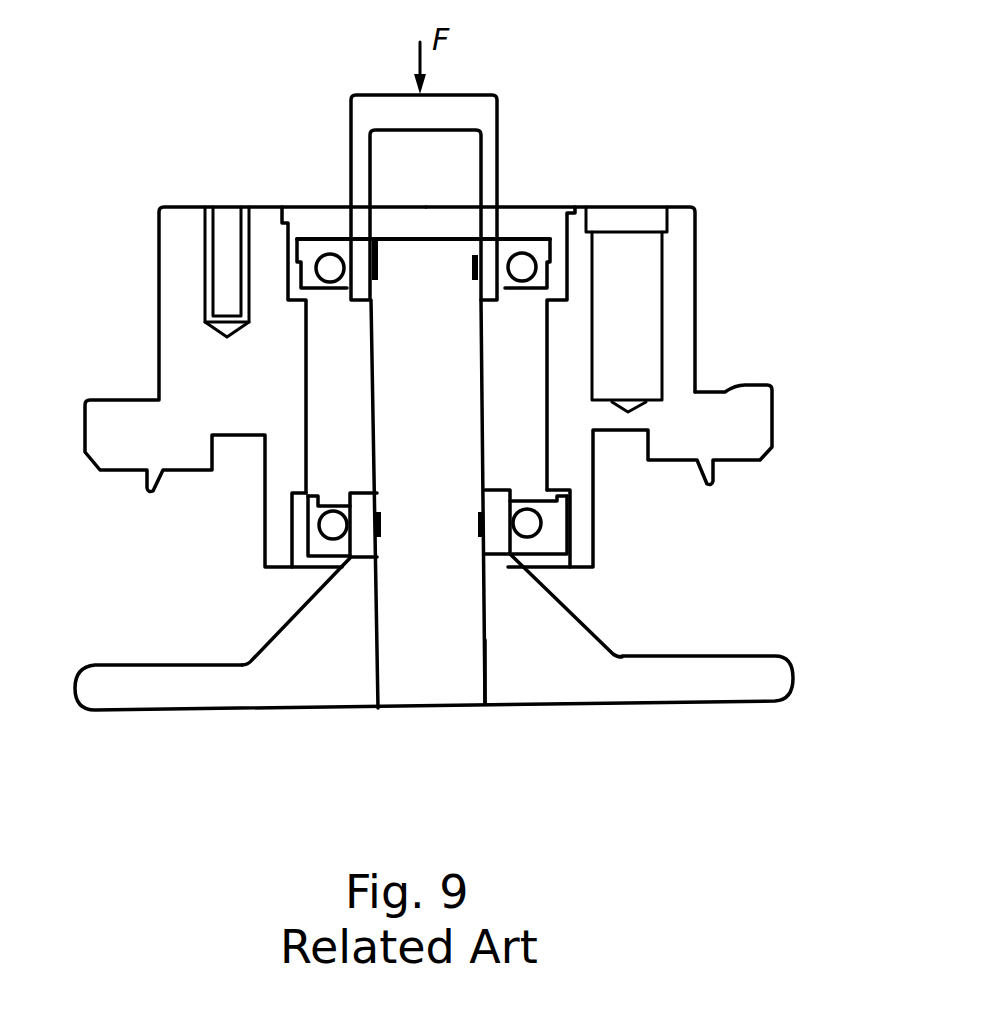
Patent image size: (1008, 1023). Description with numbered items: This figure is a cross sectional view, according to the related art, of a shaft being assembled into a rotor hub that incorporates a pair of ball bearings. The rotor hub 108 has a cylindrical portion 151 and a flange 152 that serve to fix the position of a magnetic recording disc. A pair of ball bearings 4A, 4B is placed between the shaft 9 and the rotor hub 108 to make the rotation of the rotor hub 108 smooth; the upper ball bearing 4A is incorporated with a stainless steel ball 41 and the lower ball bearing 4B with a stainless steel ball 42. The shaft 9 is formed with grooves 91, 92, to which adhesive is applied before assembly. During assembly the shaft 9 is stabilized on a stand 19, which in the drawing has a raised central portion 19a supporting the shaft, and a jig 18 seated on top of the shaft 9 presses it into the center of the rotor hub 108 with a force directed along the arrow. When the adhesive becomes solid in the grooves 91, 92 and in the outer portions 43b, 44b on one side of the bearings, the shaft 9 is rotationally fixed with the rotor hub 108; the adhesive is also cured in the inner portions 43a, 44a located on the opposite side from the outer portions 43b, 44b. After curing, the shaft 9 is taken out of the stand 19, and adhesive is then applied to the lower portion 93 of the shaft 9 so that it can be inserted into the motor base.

The jig 18 is at (362, 110).
The shaft 9 is at (432, 395).
The groove 91 is at (472, 265).
The groove 92 is at (480, 522).
The lower portion 93 is at (483, 662).
The rotor hub 108 is at (178, 342).
The cylindrical portion 151 is at (697, 262).
The flange 152 is at (748, 383).
The stainless steel ball 41 is at (330, 263).
The stainless steel ball 42 is at (340, 523).
The inner portion 43a is at (490, 262).
The outer portion 43b is at (298, 262).
The inner portion 44a is at (495, 512).
The outer portion 44b is at (297, 528).
The ball bearing 4A is at (582, 252).
The ball bearing 4B is at (588, 523).
The stand 19 is at (728, 678).
The base boss portion 19a is at (360, 553).